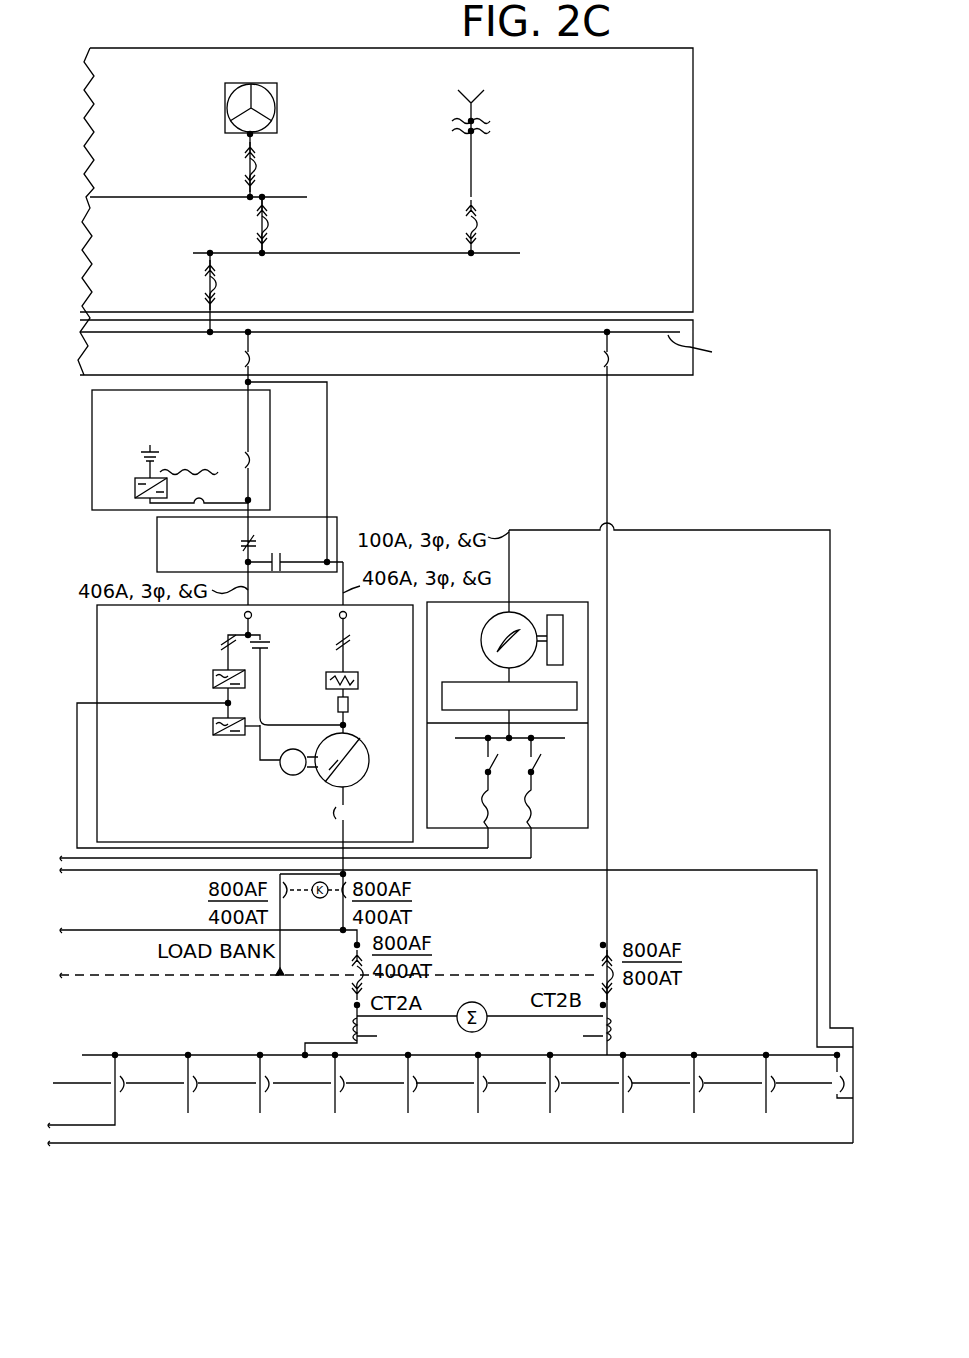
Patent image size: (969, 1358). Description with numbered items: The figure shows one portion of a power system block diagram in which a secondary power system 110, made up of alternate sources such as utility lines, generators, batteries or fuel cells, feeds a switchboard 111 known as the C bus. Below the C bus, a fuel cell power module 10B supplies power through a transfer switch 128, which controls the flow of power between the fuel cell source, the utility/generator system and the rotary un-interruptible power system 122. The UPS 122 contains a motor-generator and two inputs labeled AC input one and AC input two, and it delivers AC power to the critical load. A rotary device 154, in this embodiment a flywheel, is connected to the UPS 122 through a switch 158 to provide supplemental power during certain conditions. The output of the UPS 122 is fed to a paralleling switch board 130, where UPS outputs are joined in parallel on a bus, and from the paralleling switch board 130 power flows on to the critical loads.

The secondary power system 110 is at (693, 192).
The switchboard 111 is at (693, 324).
The fuel cell power module 10B is at (270, 458).
The transfer switch 128 is at (157, 552).
The un-interruptible power system 122 is at (97, 638).
The rotary device 154 is at (521, 602).
The switch 158 is at (536, 830).
The paralleling switch board 130 is at (178, 1146).